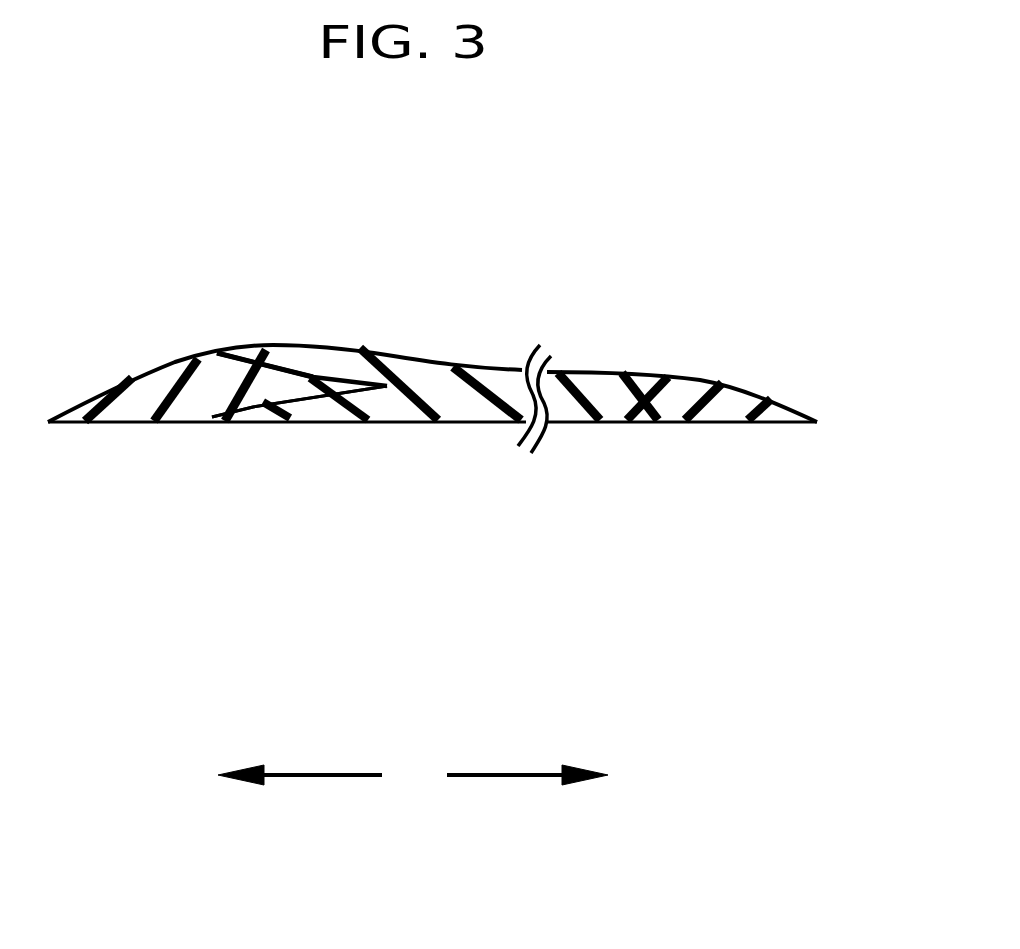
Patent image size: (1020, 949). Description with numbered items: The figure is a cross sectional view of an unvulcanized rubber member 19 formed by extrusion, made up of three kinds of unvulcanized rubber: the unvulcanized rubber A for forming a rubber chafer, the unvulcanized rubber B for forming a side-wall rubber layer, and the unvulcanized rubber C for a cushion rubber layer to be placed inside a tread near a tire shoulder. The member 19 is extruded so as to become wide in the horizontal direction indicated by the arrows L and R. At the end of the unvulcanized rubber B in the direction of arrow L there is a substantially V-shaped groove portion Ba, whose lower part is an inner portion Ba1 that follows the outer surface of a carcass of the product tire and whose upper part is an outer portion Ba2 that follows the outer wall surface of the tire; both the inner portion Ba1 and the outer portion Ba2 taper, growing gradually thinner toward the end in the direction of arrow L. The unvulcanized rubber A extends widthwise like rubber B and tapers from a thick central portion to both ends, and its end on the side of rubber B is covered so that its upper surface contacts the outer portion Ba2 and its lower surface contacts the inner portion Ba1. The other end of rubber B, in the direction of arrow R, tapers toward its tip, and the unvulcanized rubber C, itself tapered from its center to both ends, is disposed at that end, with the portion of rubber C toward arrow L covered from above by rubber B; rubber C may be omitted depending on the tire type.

The unvulcanized rubber member 19 is at (467, 285).
The unvulcanized rubber for forming a rubber chafer A is at (124, 410).
The unvulcanized rubber for forming a side-wall rubber layer B is at (475, 408).
The unvulcanized rubber for a cushion rubber layer C is at (720, 408).
The groove portion Ba is at (298, 370).
The inner portion Ba1 is at (260, 410).
The outer portion Ba2 is at (262, 347).
The arrow L is at (323, 779).
The arrow R is at (487, 779).